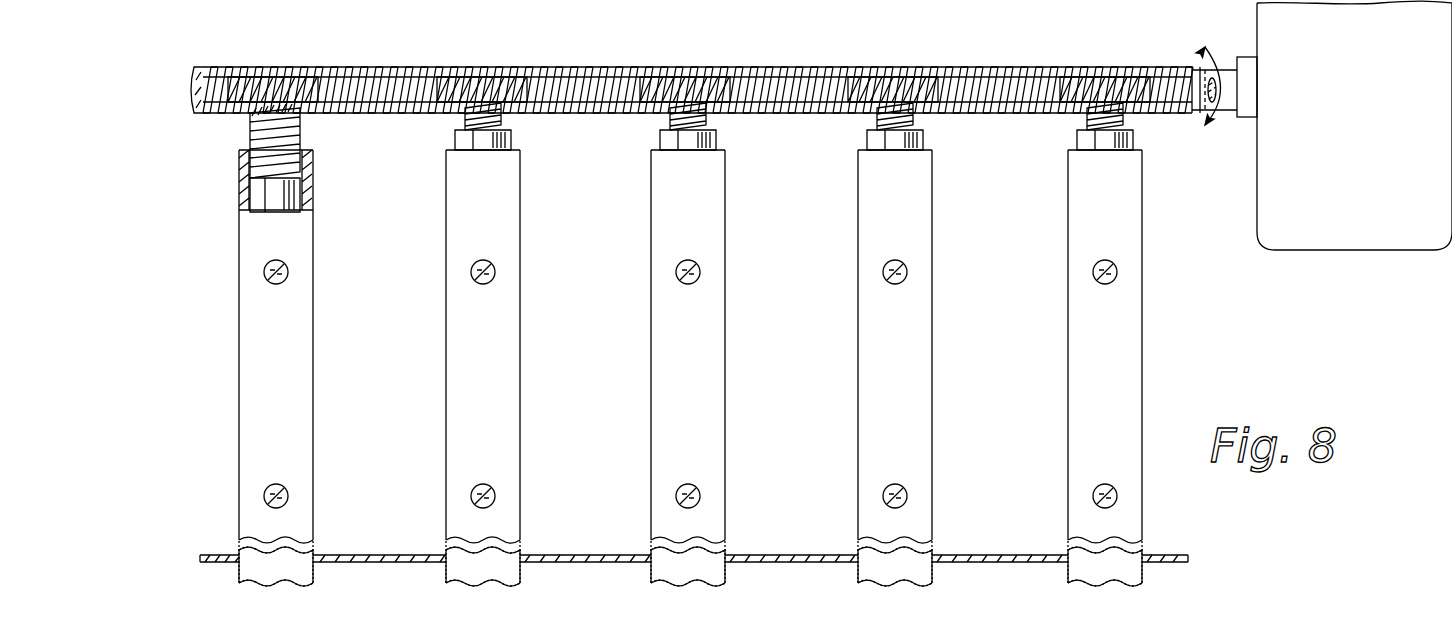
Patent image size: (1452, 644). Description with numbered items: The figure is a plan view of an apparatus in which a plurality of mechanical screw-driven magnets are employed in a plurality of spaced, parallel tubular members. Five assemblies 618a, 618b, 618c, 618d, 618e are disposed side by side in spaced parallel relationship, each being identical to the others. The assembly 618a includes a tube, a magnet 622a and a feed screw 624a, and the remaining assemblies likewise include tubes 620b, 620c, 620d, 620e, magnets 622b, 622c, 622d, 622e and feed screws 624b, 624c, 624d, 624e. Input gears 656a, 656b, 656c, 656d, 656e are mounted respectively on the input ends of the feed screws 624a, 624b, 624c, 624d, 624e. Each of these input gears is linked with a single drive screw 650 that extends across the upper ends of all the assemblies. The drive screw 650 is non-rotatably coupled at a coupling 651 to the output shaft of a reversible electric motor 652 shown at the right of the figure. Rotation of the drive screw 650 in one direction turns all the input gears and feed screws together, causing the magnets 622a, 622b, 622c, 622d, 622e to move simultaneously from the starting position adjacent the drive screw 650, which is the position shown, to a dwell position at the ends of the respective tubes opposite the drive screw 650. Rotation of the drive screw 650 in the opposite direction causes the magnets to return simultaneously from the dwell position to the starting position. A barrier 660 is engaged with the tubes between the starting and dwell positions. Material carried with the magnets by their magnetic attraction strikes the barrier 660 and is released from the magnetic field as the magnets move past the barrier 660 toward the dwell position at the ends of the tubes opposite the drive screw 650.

The drive screw 650 is at (807, 47).
The coupling 651 is at (1250, 72).
The reversible electric motor 652 is at (1389, 233).
The input gear 656a is at (286, 104).
The input gear 656b is at (493, 82).
The input gear 656c is at (685, 88).
The input gear 656d is at (905, 87).
The input gear 656e is at (1088, 85).
The feed screw 624a is at (258, 118).
The feed screw 624b is at (507, 118).
The feed screw 624c is at (715, 118).
The feed screw 624d is at (918, 117).
The feed screw 624e is at (1122, 118).
The magnet 622a is at (294, 190).
The magnet 622b is at (514, 138).
The magnet 622c is at (718, 137).
The magnet 622d is at (924, 136).
The magnet 622e is at (1134, 133).
The tube 620b is at (500, 228).
The tube 620c is at (702, 237).
The tube 620d is at (910, 220).
The tube 620e is at (1127, 330).
The assembly 618a is at (273, 345).
The assembly 618b is at (492, 344).
The assembly 618c is at (691, 344).
The assembly 618d is at (900, 344).
The assembly 618e is at (1113, 344).
The barrier 660 is at (1178, 556).